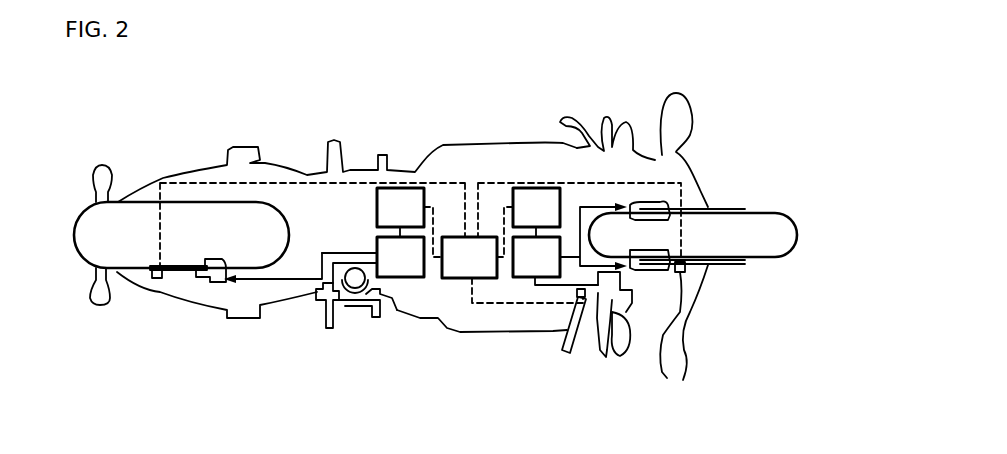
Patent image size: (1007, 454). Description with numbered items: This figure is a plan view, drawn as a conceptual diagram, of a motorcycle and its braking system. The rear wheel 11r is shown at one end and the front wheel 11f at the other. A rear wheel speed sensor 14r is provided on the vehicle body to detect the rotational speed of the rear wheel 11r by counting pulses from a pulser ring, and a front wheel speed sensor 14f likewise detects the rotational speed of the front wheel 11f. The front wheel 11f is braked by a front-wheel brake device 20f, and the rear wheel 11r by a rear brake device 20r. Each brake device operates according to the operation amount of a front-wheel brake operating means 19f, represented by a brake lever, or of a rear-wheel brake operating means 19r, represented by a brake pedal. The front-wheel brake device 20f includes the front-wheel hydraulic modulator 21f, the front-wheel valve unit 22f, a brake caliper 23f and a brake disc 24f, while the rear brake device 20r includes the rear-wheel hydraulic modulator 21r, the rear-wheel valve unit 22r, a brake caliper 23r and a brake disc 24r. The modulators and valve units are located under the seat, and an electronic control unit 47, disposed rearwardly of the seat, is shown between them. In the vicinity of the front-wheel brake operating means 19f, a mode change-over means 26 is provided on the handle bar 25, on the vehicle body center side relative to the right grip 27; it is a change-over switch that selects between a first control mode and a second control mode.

The rear wheel 11r is at (82, 242).
The front wheel 11f is at (788, 213).
The rear wheel speed sensor 14r is at (157, 280).
The front wheel speed sensor 14f is at (684, 273).
The rear-wheel brake operating means 19r is at (358, 310).
The front-wheel brake operating means 19f is at (607, 353).
The rear brake device 20r is at (221, 325).
The front-wheel brake device 20f is at (732, 281).
The rear-wheel hydraulic modulator 21r is at (407, 197).
The front-wheel hydraulic modulator 21f is at (533, 195).
The rear-wheel valve unit 22r is at (408, 273).
The front-wheel valve unit 22f is at (528, 272).
The brake caliper 23r is at (213, 283).
The brake caliper 23f is at (648, 202).
The brake disc 24r is at (185, 272).
The brake disc 24f is at (723, 205).
The handle bar 25 is at (644, 305).
The mode change-over means 26 is at (577, 292).
The right grip 27 is at (588, 310).
The electronic control unit 47 is at (458, 273).